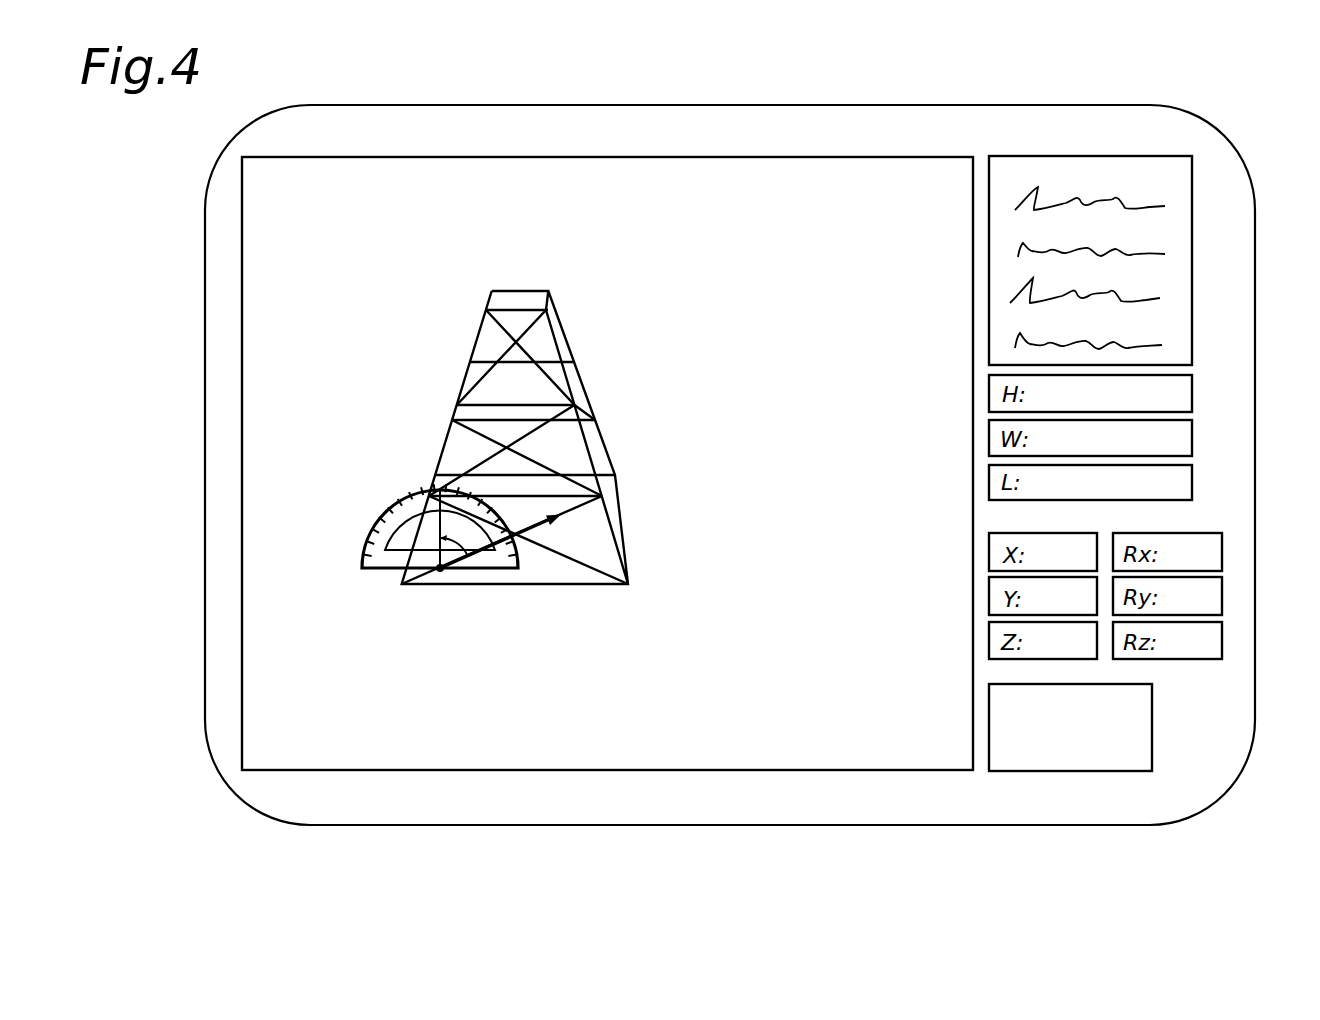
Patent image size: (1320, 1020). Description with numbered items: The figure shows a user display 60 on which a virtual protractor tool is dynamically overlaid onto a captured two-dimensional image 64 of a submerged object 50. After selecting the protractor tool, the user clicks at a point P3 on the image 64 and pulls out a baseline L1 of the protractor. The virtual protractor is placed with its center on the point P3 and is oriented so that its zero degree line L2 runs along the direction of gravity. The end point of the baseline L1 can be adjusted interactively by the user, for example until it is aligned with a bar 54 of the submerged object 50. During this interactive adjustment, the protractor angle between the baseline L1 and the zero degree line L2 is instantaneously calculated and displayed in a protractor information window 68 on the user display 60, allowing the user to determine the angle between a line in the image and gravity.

The submerged object 50 is at (458, 404).
The bar 54 is at (578, 505).
The user display 60 is at (893, 105).
The image 64 is at (628, 157).
The protractor information window 68 is at (1152, 732).
The baseline L1 is at (533, 528).
The zero degree line L2 is at (397, 508).
The point P3 is at (440, 571).